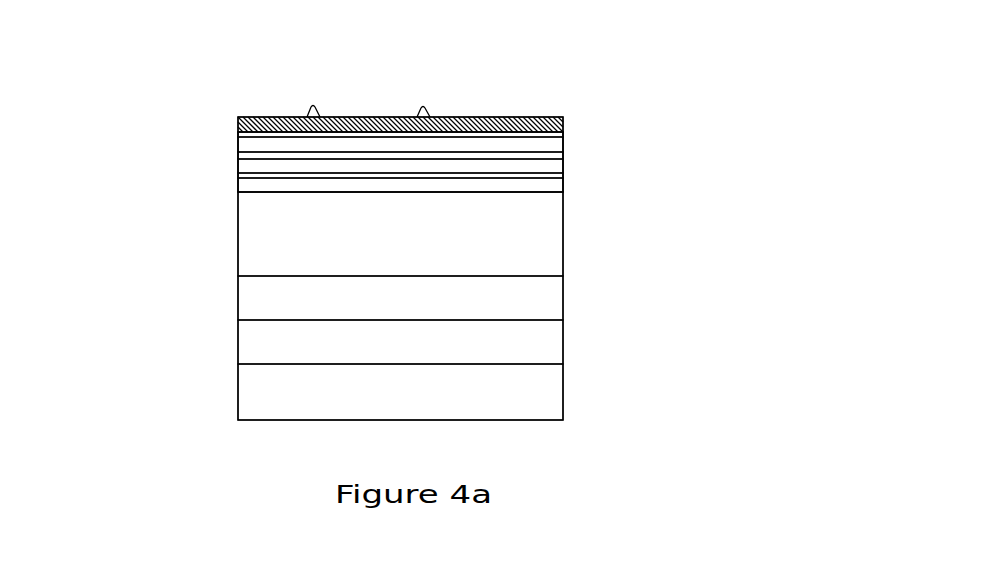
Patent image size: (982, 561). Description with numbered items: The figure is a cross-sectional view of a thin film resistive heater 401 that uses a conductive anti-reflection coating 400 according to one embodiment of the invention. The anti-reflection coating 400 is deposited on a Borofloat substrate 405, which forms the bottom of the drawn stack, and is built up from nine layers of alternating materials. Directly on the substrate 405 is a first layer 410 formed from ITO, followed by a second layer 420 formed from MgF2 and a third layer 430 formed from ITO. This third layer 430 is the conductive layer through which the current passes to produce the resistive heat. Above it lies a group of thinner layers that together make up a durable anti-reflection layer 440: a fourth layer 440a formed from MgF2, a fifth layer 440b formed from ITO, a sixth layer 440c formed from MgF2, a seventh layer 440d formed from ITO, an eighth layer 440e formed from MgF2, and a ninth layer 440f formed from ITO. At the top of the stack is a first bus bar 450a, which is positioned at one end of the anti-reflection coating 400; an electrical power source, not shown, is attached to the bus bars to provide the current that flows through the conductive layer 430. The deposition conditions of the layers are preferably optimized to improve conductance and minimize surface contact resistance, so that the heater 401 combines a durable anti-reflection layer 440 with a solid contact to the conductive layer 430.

The conductive anti-reflection coating 400 is at (185, 337).
The thin film resistive heater 401 is at (78, 497).
The Borofloat substrate 405 is at (545, 400).
The first layer 410 is at (542, 345).
The second layer 420 is at (548, 295).
The third layer 430 is at (548, 247).
The durable anti-reflection layer 440 is at (228, 118).
The fourth layer 440a is at (565, 187).
The fifth layer 440b is at (272, 176).
The sixth layer 440c is at (565, 165).
The seventh layer 440d is at (398, 156).
The eighth layer 440e is at (565, 148).
The ninth layer 440f is at (535, 137).
The first bus bar 450a is at (263, 117).